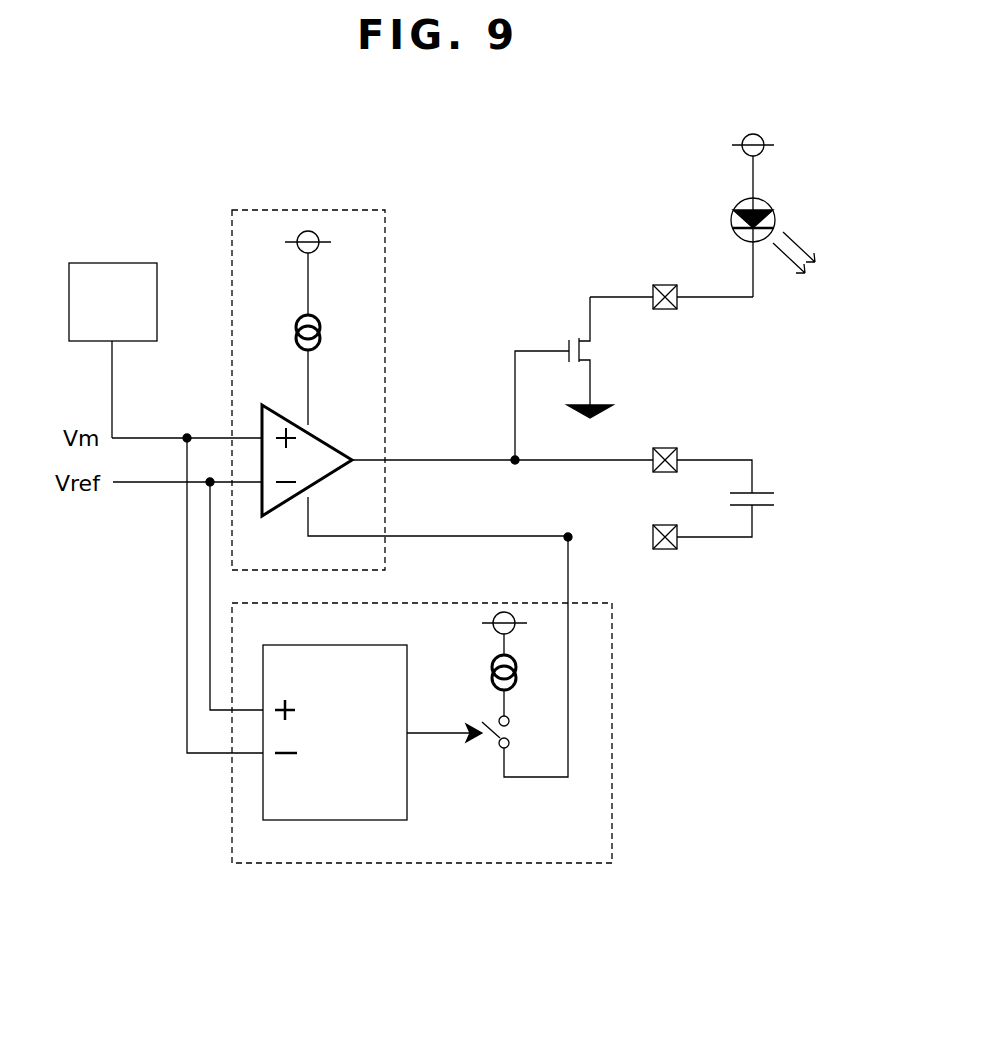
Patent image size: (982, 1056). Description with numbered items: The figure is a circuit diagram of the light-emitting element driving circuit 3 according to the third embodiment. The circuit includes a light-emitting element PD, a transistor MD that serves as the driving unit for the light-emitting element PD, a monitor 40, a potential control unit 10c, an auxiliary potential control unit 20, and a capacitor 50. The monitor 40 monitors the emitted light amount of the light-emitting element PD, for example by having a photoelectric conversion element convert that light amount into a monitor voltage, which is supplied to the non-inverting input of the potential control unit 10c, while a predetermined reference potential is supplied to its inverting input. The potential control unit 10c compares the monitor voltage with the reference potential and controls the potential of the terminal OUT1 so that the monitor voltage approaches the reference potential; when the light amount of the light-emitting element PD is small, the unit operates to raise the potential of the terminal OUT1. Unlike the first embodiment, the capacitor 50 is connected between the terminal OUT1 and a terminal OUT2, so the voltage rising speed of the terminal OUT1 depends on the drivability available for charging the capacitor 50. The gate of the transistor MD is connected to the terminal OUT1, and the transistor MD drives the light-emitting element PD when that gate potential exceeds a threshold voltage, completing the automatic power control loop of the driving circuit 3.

The light-emitting element driving circuit 3 is at (181, 844).
The potential control unit 10c is at (386, 236).
The auxiliary potential control unit 20 is at (613, 623).
The monitor 40 is at (135, 263).
The capacitor 50 is at (762, 486).
The light-emitting element PD is at (735, 211).
The transistor MD is at (572, 337).
The terminal OUT1 is at (667, 448).
The terminal OUT2 is at (667, 525).